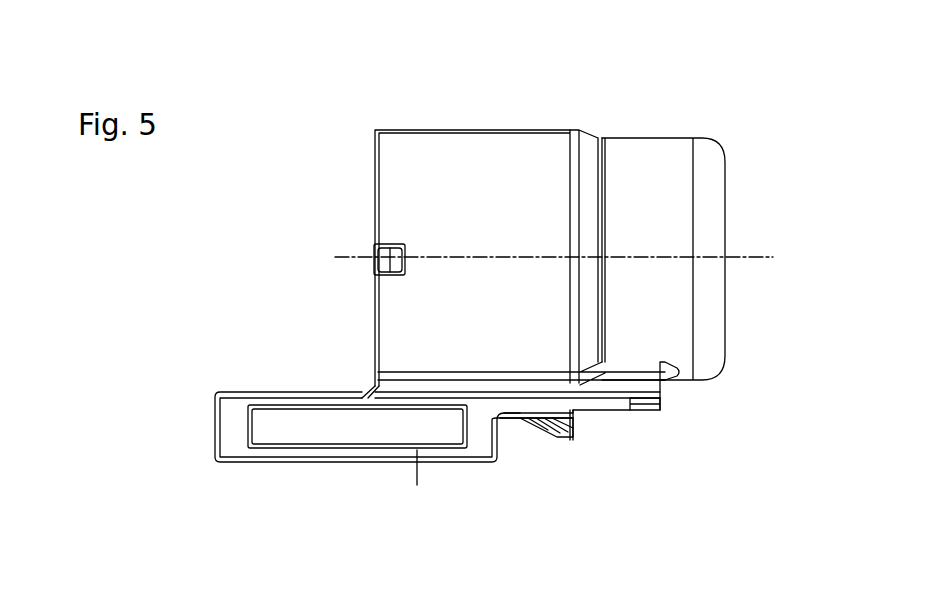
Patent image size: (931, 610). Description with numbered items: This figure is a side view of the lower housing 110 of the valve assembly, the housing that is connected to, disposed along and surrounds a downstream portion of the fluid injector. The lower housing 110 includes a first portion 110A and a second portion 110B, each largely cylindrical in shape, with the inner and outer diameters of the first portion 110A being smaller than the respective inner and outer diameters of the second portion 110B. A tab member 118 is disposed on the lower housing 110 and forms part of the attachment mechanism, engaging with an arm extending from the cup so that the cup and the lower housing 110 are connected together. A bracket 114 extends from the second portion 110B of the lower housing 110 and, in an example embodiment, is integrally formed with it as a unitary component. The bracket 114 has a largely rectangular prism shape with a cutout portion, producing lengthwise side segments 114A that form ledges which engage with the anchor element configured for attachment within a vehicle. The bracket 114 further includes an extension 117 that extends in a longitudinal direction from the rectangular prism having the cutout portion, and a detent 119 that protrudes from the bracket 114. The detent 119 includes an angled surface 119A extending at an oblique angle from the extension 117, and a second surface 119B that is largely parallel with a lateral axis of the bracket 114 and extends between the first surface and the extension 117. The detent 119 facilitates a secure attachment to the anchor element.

The lower housing 110 is at (554, 204).
The first portion 110A is at (661, 149).
The second portion 110B is at (478, 142).
The bracket 114 is at (431, 473).
The lengthwise side segments 114A is at (323, 455).
The extension 117 is at (648, 403).
The tab member 118 is at (376, 280).
The detent 119 is at (590, 499).
The angled surface 119A is at (542, 440).
The second surface 119B is at (553, 482).